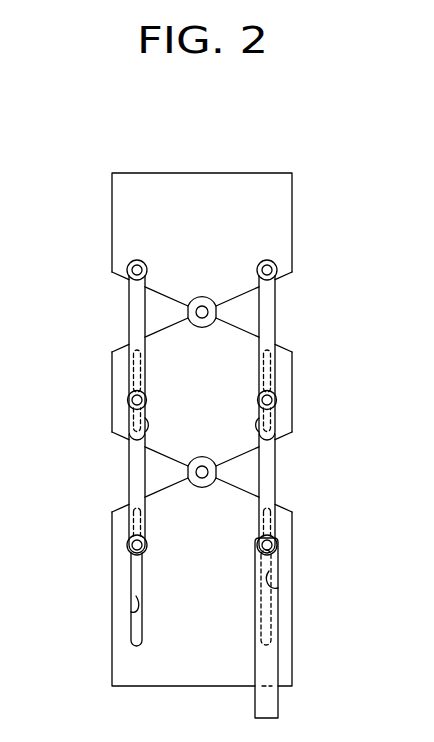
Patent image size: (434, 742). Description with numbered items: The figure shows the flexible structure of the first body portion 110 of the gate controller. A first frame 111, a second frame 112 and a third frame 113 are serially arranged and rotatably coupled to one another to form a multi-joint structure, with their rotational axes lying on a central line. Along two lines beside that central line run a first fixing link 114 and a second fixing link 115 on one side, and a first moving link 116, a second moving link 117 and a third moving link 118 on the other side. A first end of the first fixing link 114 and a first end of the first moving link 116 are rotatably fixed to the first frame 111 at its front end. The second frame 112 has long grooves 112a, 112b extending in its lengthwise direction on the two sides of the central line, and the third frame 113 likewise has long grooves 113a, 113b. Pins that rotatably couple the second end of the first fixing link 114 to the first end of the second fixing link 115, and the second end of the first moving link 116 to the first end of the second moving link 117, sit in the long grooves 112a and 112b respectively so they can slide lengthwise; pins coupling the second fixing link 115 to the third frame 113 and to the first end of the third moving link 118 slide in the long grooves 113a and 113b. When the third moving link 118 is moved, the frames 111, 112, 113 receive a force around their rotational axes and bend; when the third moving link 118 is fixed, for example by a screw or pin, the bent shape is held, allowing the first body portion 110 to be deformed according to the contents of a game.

The first body portion 110 is at (331, 168).
The first frame 111 is at (292, 208).
The second frame 112 is at (292, 377).
The third frame 113 is at (292, 612).
The first fixing link 114 is at (129, 311).
The second fixing link 115 is at (129, 464).
The first moving link 116 is at (275, 311).
The second moving link 117 is at (275, 472).
The long groove 112a is at (130, 437).
The long groove 112b is at (274, 441).
The long groove 113a is at (131, 611).
The long groove 113b is at (278, 588).
The third moving link 118 is at (278, 702).